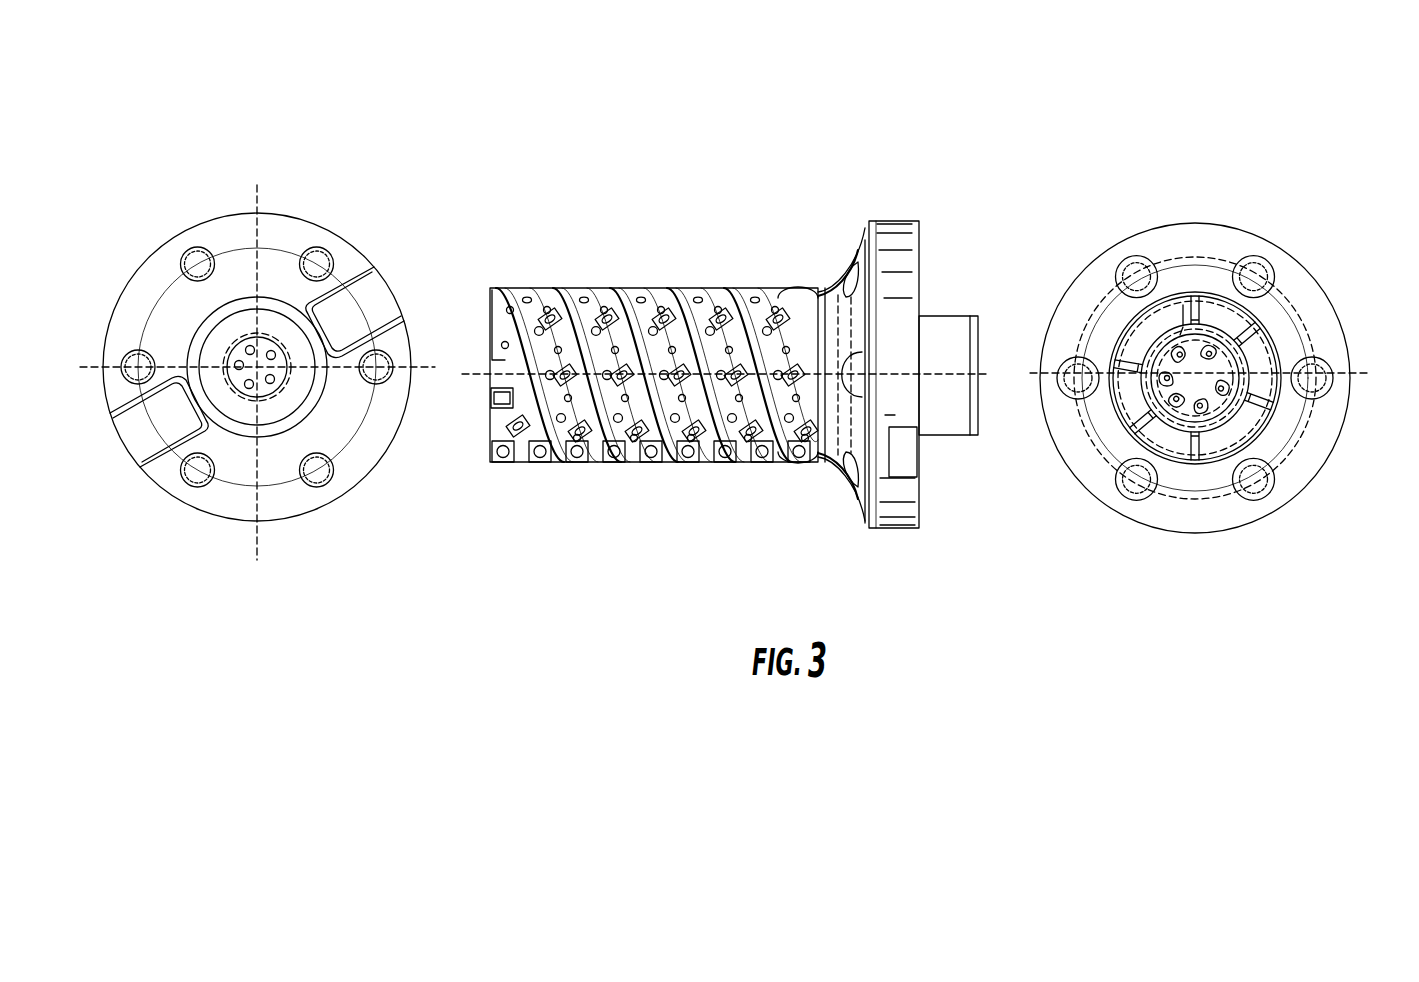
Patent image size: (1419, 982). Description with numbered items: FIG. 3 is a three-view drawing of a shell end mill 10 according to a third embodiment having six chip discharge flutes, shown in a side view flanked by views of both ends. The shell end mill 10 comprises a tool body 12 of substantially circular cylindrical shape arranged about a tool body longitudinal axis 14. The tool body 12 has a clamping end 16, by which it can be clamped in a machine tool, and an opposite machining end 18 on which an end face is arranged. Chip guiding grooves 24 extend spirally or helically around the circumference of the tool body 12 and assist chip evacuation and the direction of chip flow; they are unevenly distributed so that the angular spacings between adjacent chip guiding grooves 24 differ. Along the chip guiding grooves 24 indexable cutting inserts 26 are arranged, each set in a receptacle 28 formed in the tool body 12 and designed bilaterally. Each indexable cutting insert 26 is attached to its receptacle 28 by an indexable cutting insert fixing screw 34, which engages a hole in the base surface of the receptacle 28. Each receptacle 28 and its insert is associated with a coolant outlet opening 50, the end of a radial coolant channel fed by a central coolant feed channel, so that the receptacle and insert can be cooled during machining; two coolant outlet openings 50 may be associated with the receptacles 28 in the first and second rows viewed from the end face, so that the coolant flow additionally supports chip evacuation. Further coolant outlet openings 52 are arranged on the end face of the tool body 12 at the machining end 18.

The shell end mill 10 is at (802, 111).
The tool body 12 is at (818, 290).
The tool body longitudinal axis 14 is at (933, 376).
The clamping end 16 is at (237, 500).
The machining end 18 is at (1300, 455).
The chip guiding grooves 24 is at (817, 293).
The indexable cutting inserts 26 is at (662, 290).
The receptacle 28 is at (553, 453).
The indexable cutting insert fixing screw 34 is at (612, 463).
The coolant outlet opening 50 is at (497, 296).
The coolant outlet openings 52 is at (1180, 353).